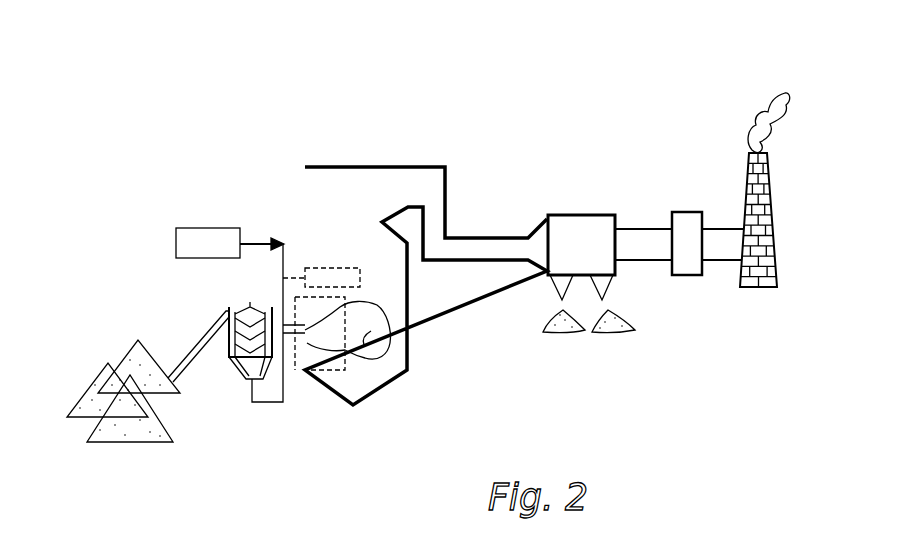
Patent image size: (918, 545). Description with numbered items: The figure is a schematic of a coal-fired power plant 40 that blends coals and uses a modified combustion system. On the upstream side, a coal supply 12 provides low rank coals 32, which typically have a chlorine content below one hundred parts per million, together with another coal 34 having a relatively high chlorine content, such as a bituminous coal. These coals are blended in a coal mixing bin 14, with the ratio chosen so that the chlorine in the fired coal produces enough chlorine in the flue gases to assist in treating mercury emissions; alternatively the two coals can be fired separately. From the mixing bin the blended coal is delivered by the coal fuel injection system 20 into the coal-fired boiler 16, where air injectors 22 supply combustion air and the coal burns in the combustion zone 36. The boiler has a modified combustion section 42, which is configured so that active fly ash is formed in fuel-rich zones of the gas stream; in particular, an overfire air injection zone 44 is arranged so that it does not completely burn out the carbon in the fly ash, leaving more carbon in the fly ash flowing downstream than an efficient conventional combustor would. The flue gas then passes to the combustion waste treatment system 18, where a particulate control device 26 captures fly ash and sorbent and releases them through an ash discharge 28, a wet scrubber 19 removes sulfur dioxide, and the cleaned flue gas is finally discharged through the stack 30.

The power plant 40 is at (228, 114).
The coal supply 12 is at (101, 358).
The low rank coals 32 is at (160, 393).
The high chlorine content coal 34 is at (108, 428).
The coal mixing bin 14 is at (240, 368).
The air injectors 22 is at (287, 318).
The coal fuel injection system 20 is at (290, 338).
The overfire air injection zone 44 is at (330, 267).
The coal-fired boiler 16 is at (407, 314).
The combustion zone 36 is at (390, 343).
The modified combustion section 42 is at (333, 363).
The combustion waste treatment system 18 is at (531, 201).
The particulate control device (PCD) 26 is at (568, 215).
The ash discharge 28 is at (617, 325).
The wet scrubber 19 is at (687, 225).
The stack 30 is at (765, 217).